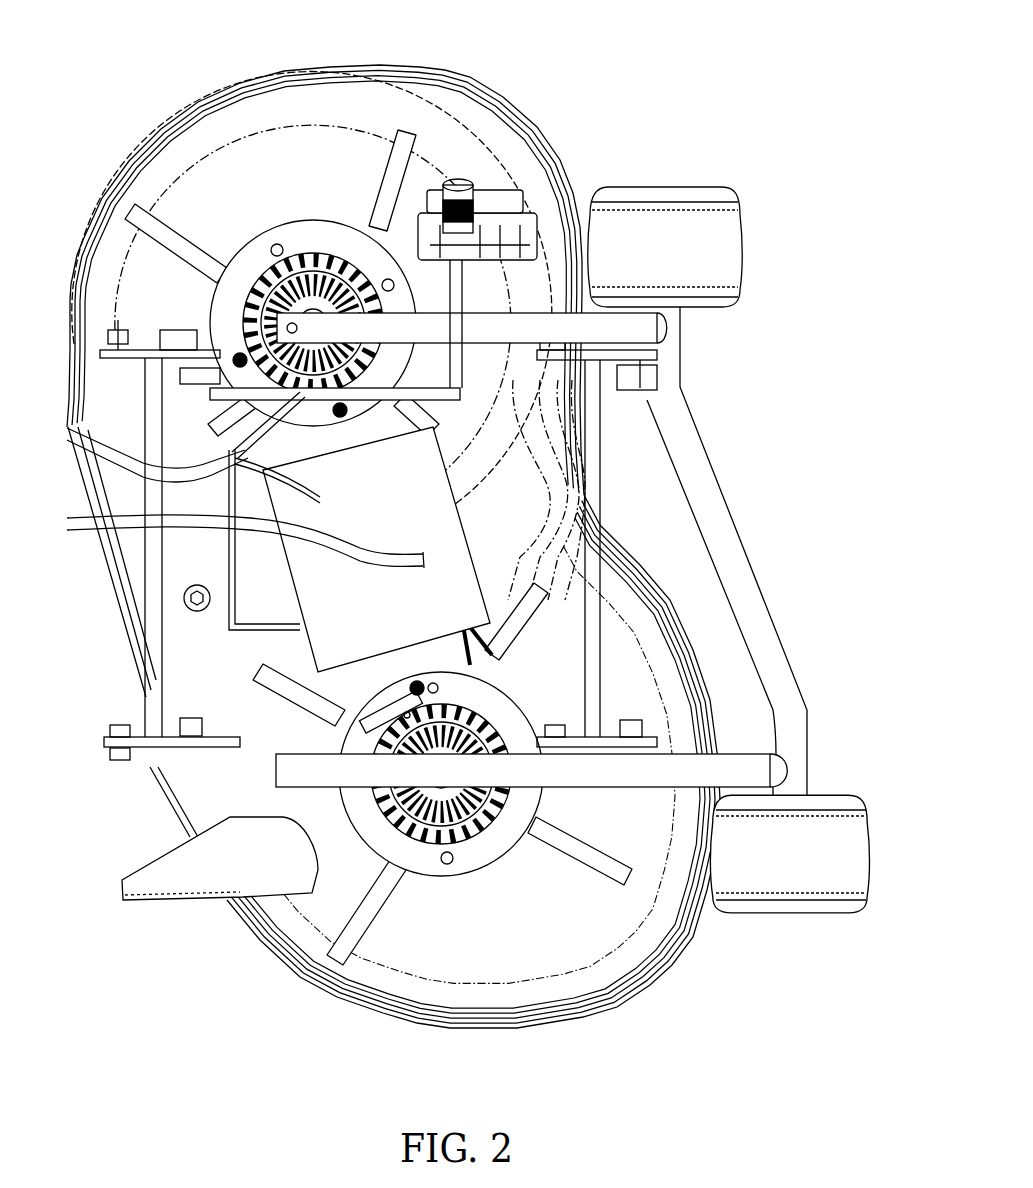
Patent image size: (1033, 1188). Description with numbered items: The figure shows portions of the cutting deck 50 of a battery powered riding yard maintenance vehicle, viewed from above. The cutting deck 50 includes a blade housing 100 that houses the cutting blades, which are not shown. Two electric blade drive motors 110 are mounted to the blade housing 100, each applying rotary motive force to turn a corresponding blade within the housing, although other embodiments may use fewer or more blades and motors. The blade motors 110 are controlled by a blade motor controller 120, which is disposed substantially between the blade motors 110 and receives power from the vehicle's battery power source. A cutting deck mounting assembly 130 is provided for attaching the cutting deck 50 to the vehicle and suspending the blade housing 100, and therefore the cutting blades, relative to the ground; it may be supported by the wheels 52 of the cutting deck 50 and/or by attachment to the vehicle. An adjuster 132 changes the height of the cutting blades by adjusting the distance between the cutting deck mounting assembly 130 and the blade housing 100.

The cutting deck 50 is at (643, 82).
The wheels 52 is at (703, 202).
The blade housing 100 is at (297, 102).
The electric blade drive motors 110 is at (300, 260).
The blade motor controllers 120 is at (422, 607).
The cutting deck mounting assembly 130 is at (590, 497).
The adjuster 132 is at (478, 223).